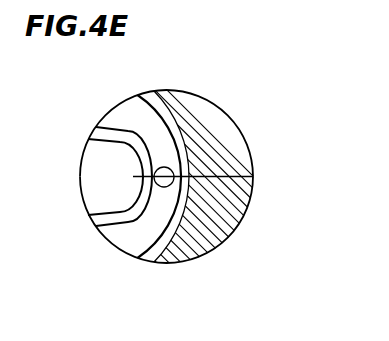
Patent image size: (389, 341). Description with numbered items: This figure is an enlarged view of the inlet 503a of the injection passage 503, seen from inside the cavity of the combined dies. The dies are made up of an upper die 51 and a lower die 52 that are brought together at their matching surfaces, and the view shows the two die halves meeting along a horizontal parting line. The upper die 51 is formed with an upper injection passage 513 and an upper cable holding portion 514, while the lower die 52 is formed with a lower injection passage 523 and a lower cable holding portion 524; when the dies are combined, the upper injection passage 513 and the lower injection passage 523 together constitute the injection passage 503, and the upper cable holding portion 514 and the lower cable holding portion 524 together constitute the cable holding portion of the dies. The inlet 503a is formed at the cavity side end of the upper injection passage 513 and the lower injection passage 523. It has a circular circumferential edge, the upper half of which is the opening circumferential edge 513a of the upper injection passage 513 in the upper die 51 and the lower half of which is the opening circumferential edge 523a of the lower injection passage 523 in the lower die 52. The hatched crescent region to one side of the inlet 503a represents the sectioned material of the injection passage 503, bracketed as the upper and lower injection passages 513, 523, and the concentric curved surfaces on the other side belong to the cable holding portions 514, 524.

The upper die 51 is at (136, 111).
The lower die 52 is at (123, 238).
The upper cable holding portion 514 is at (128, 165).
The lower cable holding portion 524 is at (128, 190).
The injection passage 503 is at (322, 133).
The inlet of the injection passage 503a is at (158, 161).
The upper injection passage 513 is at (184, 173).
The lower injection passage 523 is at (184, 181).
The opening circumferential edge of the upper injection passage 513a is at (178, 164).
The opening circumferential edge of the lower injection passage 523a is at (167, 187).